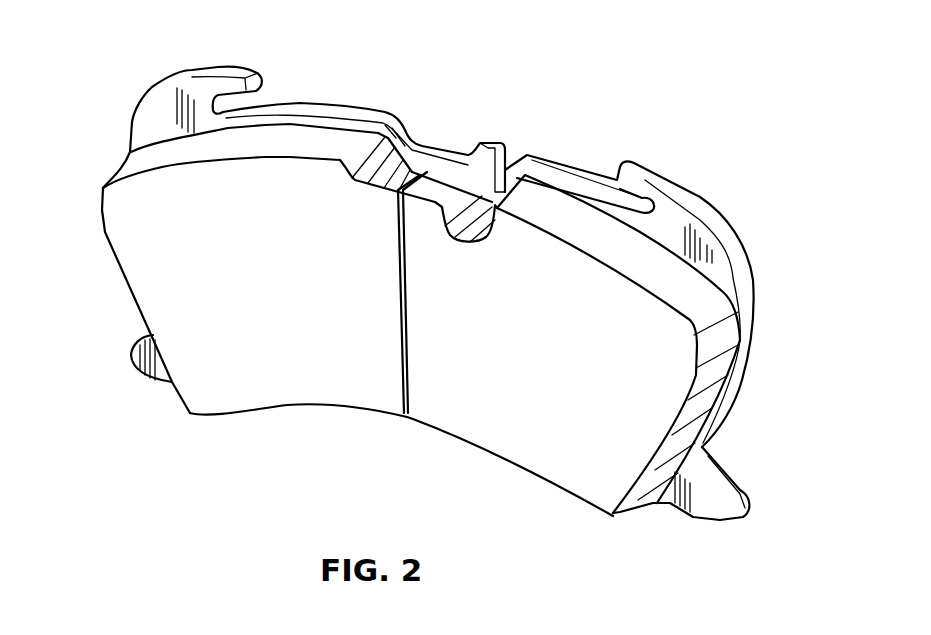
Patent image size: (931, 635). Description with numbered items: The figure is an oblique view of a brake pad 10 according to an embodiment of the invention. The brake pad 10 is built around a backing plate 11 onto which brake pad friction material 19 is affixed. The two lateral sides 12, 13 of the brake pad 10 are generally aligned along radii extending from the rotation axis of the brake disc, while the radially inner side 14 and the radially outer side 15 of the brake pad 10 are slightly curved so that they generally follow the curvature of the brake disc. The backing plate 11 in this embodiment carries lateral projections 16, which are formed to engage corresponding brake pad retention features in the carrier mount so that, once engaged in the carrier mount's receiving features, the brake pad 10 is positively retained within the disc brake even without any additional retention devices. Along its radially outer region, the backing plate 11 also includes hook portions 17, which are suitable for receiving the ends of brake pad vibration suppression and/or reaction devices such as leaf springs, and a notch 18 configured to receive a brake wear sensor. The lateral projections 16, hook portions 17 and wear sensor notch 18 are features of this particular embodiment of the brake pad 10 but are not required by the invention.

The brake pad 10 is at (646, 84).
The backing plate 11 is at (717, 217).
The lateral side 12 is at (118, 275).
The lateral side 13 is at (720, 397).
The radially inner side 14 is at (300, 408).
The radially outer side 15 is at (340, 106).
The lateral projection 16 is at (753, 498).
The hook portion 17 is at (250, 70).
The notch 18 is at (512, 142).
The brake pad friction material 19 is at (547, 487).